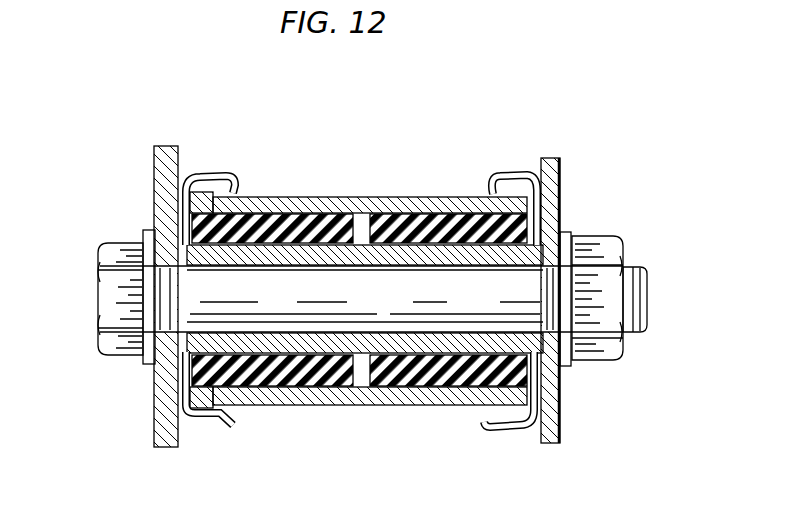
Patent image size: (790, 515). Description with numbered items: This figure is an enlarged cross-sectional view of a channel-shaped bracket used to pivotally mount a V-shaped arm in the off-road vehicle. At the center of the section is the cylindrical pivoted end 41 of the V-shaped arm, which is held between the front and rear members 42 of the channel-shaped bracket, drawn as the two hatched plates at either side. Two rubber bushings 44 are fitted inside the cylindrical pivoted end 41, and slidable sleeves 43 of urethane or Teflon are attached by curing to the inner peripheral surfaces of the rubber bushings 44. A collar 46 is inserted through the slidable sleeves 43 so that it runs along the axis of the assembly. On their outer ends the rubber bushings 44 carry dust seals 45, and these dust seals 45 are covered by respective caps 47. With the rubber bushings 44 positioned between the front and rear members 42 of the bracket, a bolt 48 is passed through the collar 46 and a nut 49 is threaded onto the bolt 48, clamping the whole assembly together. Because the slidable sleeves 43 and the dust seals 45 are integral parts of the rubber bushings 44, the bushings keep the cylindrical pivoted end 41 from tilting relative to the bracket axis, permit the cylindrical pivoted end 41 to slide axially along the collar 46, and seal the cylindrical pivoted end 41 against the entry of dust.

The cylindrical pivoted end of V-shaped arm 41 is at (348, 204).
The front and rear members of channel-shaped bracket 42 is at (553, 198).
The slidable sleeve 43 is at (276, 262).
The rubber bushing 44 is at (427, 226).
The dust seal 45 is at (209, 173).
The collar 46 is at (385, 252).
The cap 47 is at (510, 177).
The bolt 48 is at (118, 289).
The nut 49 is at (648, 316).